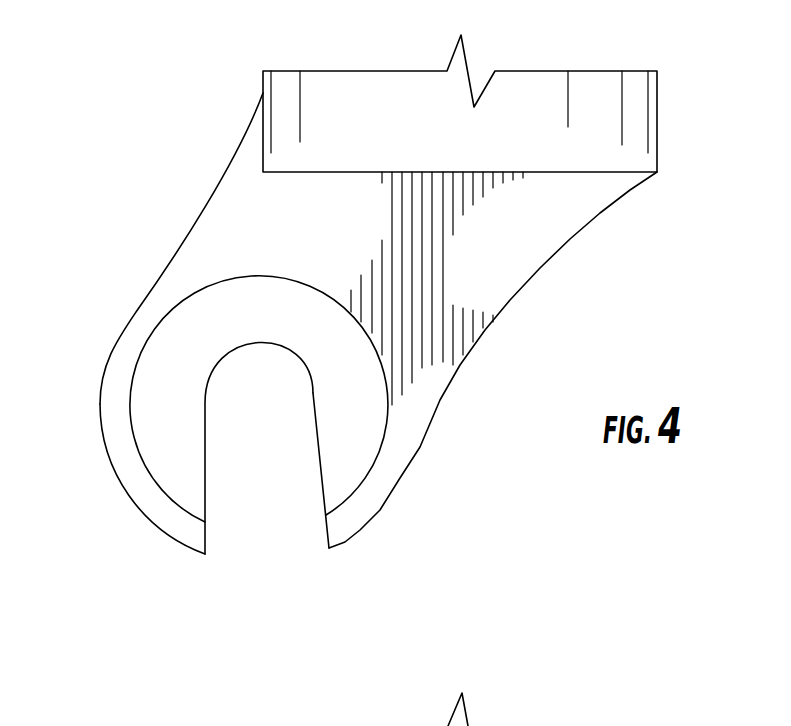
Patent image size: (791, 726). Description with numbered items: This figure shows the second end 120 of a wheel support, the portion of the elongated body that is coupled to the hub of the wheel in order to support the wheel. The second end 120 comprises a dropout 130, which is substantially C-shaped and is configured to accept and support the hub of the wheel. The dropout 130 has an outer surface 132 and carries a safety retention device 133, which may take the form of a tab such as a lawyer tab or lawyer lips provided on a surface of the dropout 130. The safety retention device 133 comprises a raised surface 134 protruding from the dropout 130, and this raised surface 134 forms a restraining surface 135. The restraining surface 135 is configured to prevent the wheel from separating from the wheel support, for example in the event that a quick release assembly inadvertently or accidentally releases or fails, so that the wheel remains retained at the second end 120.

The second end 120 is at (608, 122).
The dropout 130 is at (523, 238).
The outer surface 132 is at (155, 373).
The safety retention device 133 is at (130, 472).
The raised surface 134 is at (120, 445).
The restraining surface 135 is at (336, 508).